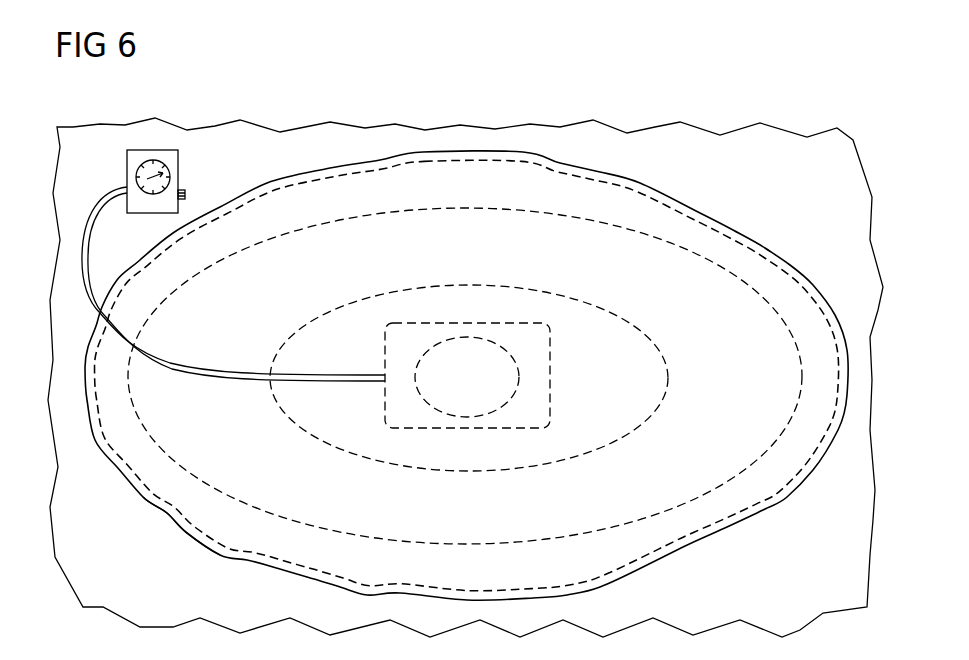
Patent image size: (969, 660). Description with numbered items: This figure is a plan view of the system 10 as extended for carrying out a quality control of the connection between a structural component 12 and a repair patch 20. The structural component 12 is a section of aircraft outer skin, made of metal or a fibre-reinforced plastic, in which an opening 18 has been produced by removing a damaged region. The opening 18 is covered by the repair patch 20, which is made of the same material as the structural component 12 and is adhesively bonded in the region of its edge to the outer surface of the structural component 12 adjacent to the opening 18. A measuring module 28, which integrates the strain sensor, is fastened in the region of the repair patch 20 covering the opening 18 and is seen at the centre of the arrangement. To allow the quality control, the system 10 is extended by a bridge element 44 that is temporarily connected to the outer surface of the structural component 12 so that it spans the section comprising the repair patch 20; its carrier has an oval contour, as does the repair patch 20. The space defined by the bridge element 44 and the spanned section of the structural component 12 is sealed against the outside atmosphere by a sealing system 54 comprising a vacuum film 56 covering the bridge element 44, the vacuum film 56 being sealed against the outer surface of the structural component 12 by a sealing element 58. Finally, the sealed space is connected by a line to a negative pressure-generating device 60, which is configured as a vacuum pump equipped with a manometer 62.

The system 10 is at (583, 110).
The structural component 12 is at (700, 137).
The opening 18 is at (550, 352).
The repair patch 20 is at (635, 428).
The measuring module 28 is at (428, 352).
The bridge element 44 is at (715, 492).
The sealing system 54 is at (733, 197).
The vacuum film 56 is at (752, 267).
The sealing element 58 is at (160, 508).
The negative pressure-generating device 60 is at (127, 163).
The manometer 62 is at (178, 167).